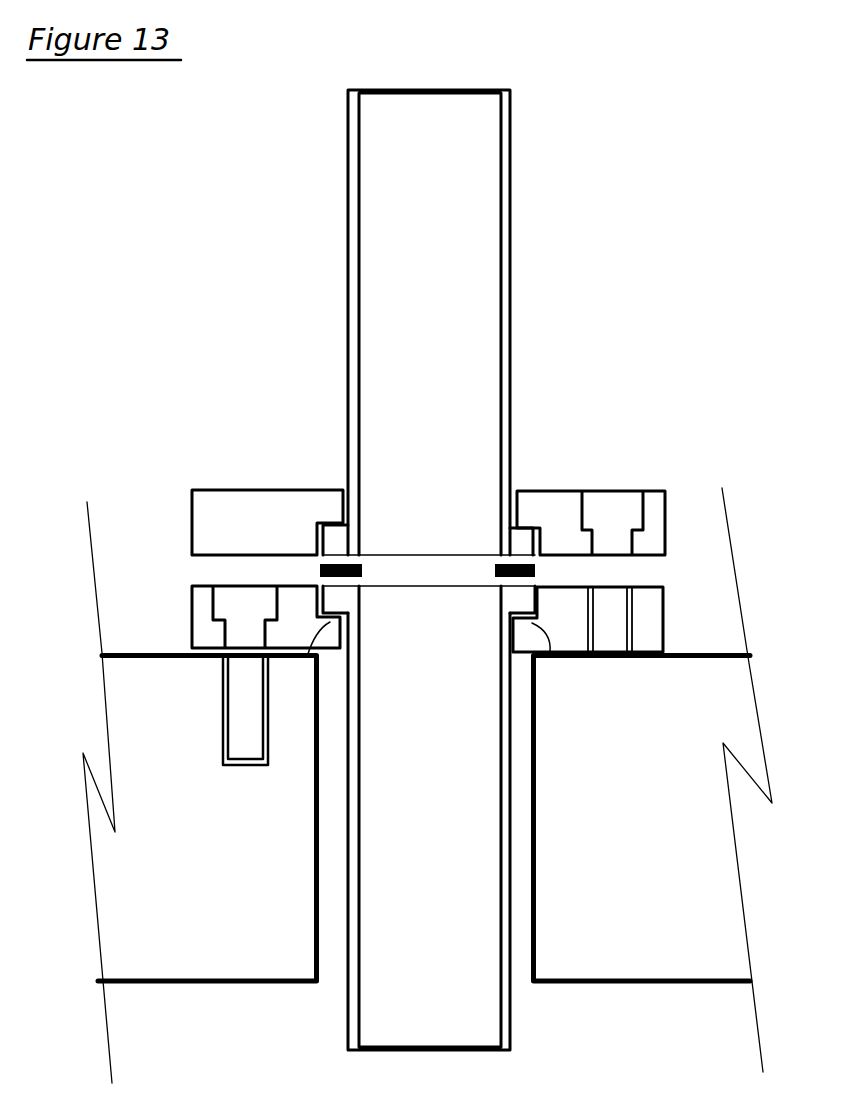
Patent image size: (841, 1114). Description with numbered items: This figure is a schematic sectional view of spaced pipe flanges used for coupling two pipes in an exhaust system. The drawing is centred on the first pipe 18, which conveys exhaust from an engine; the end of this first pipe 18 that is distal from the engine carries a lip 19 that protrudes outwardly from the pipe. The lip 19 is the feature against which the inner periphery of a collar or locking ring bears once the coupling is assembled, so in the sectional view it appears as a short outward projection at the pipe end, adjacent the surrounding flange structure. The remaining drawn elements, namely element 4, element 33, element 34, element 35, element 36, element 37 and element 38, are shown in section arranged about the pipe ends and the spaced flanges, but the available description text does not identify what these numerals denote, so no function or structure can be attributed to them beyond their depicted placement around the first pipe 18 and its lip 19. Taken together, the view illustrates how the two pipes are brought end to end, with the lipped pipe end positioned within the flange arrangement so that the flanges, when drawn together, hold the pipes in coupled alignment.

The frame wall 4 is at (177, 965).
The first pipe 18 is at (338, 1033).
The lip 19 is at (522, 595).
The lower clamp block 33 is at (200, 627).
The mounting lug 34 is at (307, 657).
The upper clamp block 35 is at (213, 503).
The upper pipe section 36 is at (517, 222).
The seal and fastening bolt 37 is at (370, 570).
The fastening bolt 38 is at (618, 658).